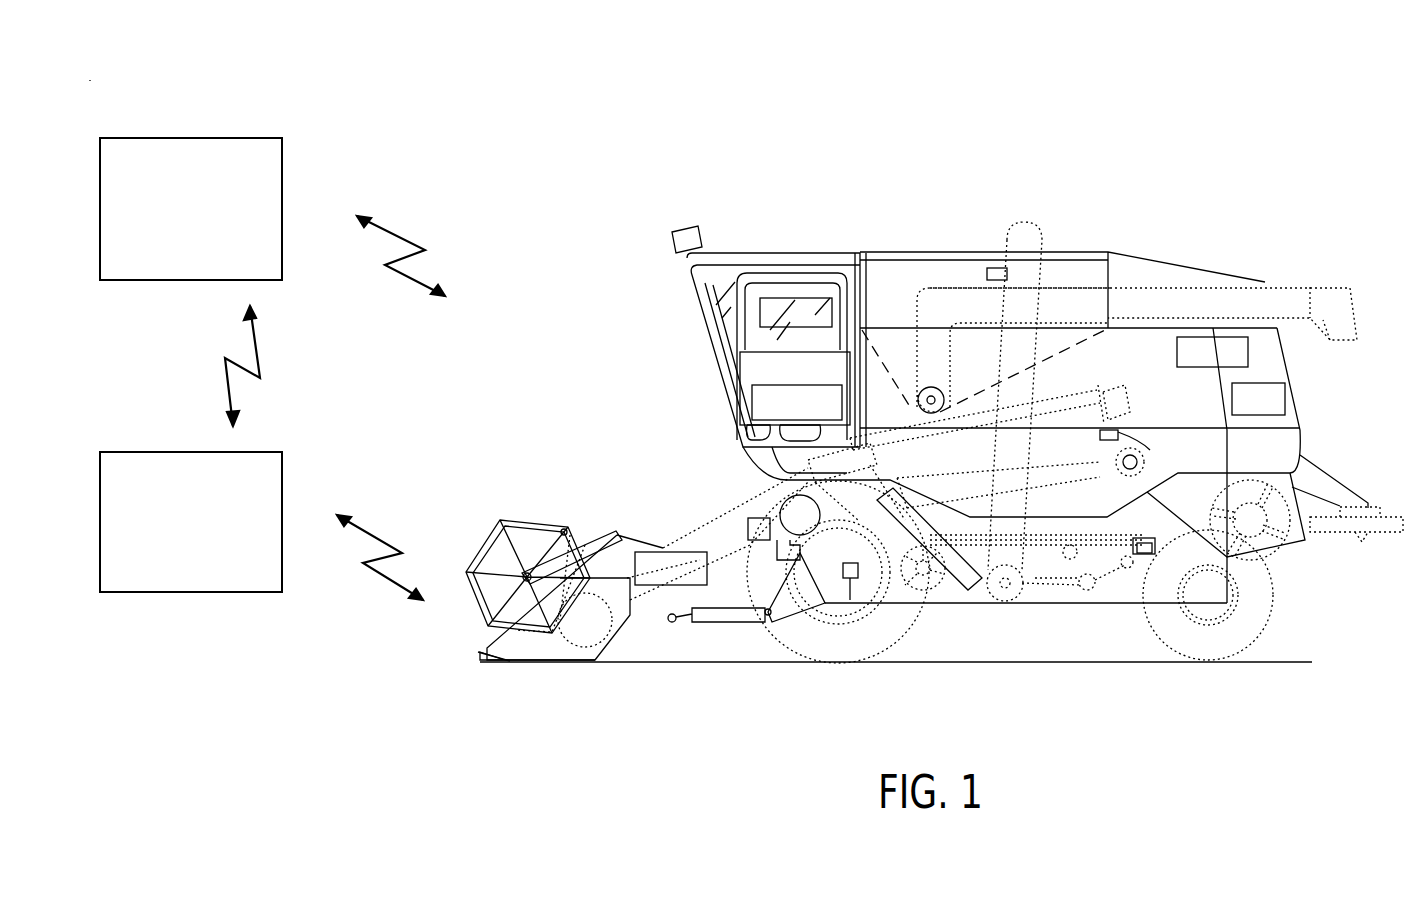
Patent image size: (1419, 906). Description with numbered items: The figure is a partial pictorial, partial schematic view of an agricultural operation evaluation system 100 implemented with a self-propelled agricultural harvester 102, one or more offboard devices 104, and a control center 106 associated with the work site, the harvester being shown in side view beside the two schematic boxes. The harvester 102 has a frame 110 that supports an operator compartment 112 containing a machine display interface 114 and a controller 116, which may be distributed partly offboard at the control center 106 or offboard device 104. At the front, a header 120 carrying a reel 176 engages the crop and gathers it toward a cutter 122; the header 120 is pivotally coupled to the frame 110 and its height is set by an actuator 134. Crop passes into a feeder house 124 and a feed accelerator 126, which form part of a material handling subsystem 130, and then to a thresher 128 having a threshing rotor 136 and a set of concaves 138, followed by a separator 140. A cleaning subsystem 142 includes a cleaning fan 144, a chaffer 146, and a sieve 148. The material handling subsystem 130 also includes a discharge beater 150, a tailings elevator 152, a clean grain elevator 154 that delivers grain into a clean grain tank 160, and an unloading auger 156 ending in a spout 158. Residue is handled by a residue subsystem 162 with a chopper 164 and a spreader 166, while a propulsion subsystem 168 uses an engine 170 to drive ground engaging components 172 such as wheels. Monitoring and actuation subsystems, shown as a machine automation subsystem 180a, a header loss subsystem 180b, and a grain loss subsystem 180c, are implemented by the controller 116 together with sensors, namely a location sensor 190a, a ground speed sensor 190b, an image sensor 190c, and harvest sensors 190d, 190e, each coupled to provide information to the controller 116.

The agricultural operation evaluation system 100 is at (308, 48).
The self-propelled agricultural harvester 102 is at (652, 124).
The offboard device 104 is at (190, 137).
The control center 106 is at (190, 451).
The frame 110 is at (792, 607).
The operator compartment 112 is at (778, 252).
The machine display interface 114 is at (796, 312).
The controller 116 is at (795, 388).
The header 120 is at (548, 518).
The cutter 122 is at (520, 666).
The feeder house 124 is at (700, 528).
The feed accelerator 126 is at (783, 505).
The thresher 128 is at (1058, 385).
The material handling subsystem 130 is at (1022, 612).
The actuator 134 is at (726, 628).
The threshing rotor 136 is at (1100, 400).
The set of concaves 138 is at (1120, 440).
The separator 140 is at (1047, 472).
The cleaning subsystem 142 is at (1145, 566).
The cleaning fan 144 is at (900, 590).
The chaffer 146 is at (1142, 532).
The sieve 148 is at (1090, 542).
The discharge beater 150 is at (1147, 462).
The tailings elevator 152 is at (908, 503).
The clean grain elevator 154 is at (1022, 555).
The unloading auger 156 is at (942, 398).
The spout 158 is at (1330, 287).
The clean grain tank 160 is at (892, 323).
The residue subsystem 162 is at (1347, 468).
The chopper 164 is at (1255, 555).
The spreader 166 is at (1330, 533).
The propulsion subsystem 168 is at (1306, 385).
The engine 170 is at (1258, 399).
The ground engaging components 172 is at (775, 640).
The reel 176 is at (565, 528).
The machine automation subsystem 180a is at (797, 402).
The header loss subsystem 180b is at (671, 568).
The grain loss subsystem 180c is at (1212, 352).
The location sensor 190a is at (745, 516).
The ground speed sensor 190b is at (850, 600).
The image sensor 190c is at (693, 228).
The harvest sensor 190d is at (1155, 550).
The harvest sensor 190e is at (990, 266).